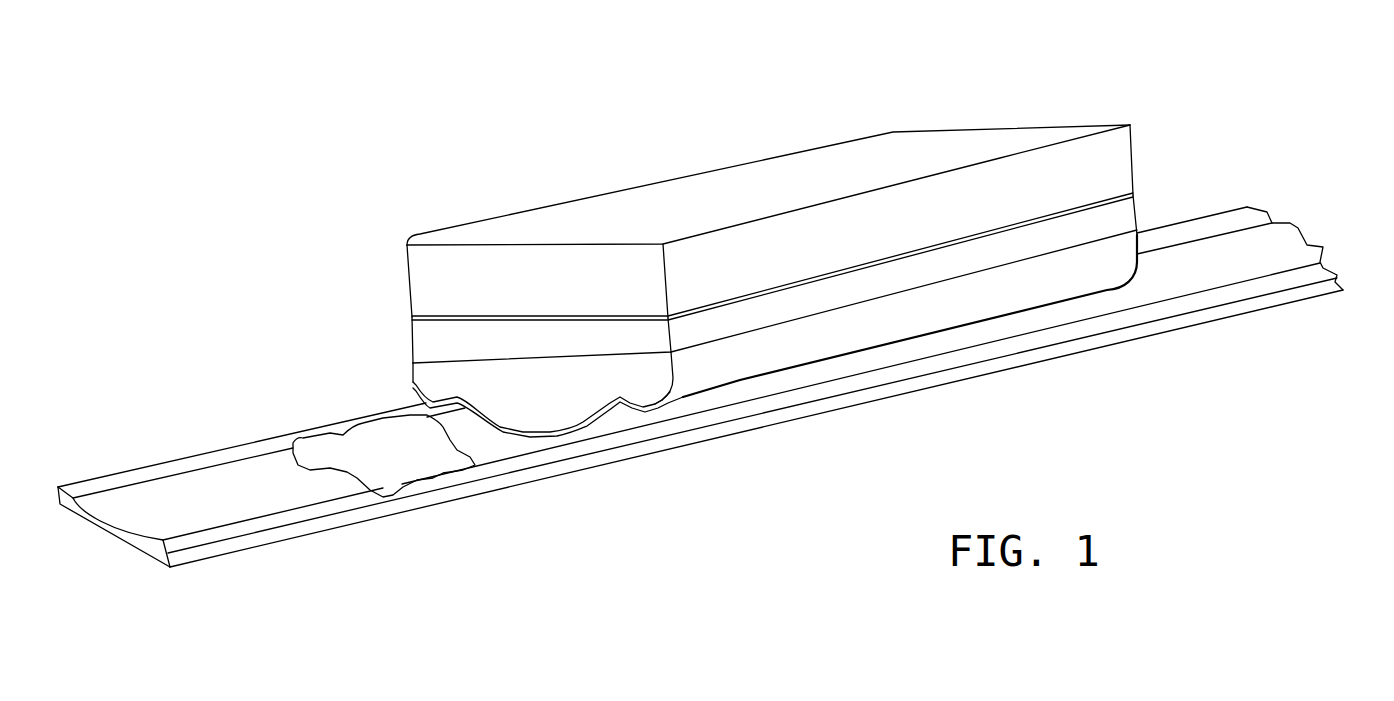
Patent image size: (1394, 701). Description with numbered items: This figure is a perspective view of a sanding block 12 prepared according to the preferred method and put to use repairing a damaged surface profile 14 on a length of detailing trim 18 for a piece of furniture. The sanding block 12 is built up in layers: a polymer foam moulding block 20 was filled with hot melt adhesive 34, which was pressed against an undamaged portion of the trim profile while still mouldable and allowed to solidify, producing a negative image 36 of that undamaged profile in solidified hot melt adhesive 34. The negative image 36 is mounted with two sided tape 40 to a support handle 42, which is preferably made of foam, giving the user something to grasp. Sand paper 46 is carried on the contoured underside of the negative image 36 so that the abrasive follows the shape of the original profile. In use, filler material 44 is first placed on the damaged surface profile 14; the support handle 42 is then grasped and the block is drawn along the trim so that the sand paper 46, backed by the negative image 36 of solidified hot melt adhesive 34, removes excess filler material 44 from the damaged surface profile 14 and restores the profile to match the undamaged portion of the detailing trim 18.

The sanding block 12 is at (1140, 172).
The damaged surface profile 14 is at (310, 407).
The detailing trim 18 is at (623, 462).
The polymer foam moulding block 20 is at (1132, 212).
The hot melt adhesive 34 is at (780, 340).
The negative image 36 is at (525, 433).
The two sided tape 40 is at (427, 317).
The support handle 42 is at (863, 217).
The filler material 44 is at (390, 470).
The sand paper 46 is at (670, 402).